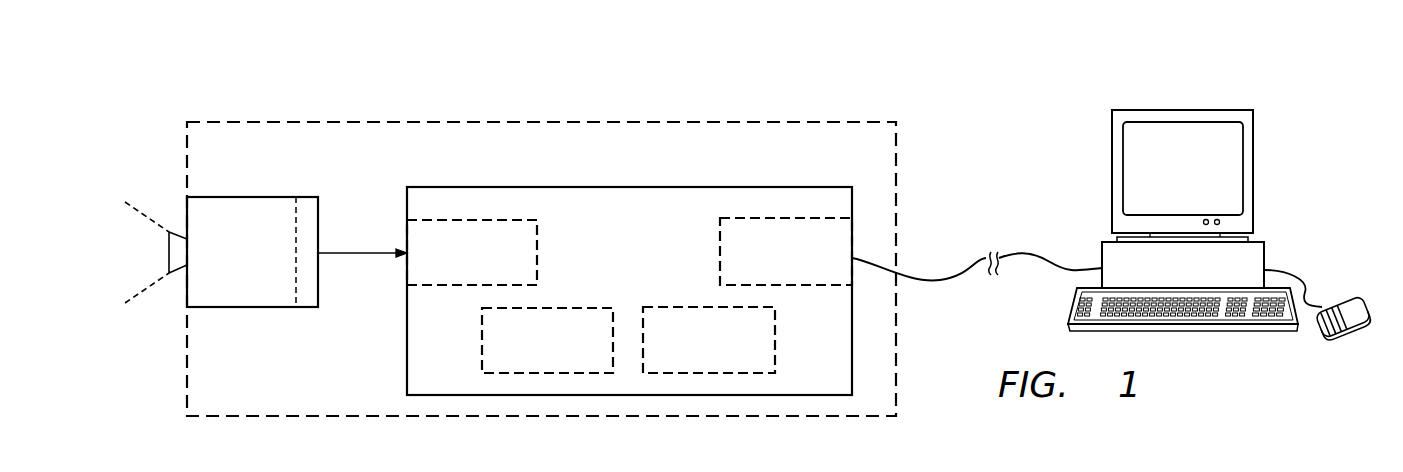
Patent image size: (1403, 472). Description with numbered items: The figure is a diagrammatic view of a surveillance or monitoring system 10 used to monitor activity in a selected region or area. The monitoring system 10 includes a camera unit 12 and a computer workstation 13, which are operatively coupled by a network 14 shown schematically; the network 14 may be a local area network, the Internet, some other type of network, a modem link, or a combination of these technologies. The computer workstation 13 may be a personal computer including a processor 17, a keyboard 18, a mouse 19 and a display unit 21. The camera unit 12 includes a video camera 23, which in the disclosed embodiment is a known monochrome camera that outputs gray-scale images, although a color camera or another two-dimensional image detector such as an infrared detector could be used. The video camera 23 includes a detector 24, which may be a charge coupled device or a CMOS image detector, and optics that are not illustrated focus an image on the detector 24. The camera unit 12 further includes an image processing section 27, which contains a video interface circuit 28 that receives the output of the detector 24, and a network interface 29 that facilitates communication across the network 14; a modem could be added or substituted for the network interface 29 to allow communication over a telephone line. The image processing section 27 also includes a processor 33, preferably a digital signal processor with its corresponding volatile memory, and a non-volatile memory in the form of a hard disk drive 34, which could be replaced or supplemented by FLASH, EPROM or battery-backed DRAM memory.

The monitoring system 10 is at (1036, 96).
The camera unit 12 is at (283, 376).
The computer workstation 13 is at (1331, 167).
The network 14 is at (942, 281).
The processor 17 is at (1265, 252).
The keyboard 18 is at (1220, 333).
The mouse 19 is at (1352, 333).
The display unit 21 is at (1183, 108).
The video camera 23 is at (217, 197).
The detector 24 is at (305, 205).
The image processing section 27 is at (407, 368).
The video interface circuit 28 is at (538, 263).
The network interface 29 is at (720, 238).
The processor 33 is at (482, 350).
The hard disk drive 34 is at (775, 352).